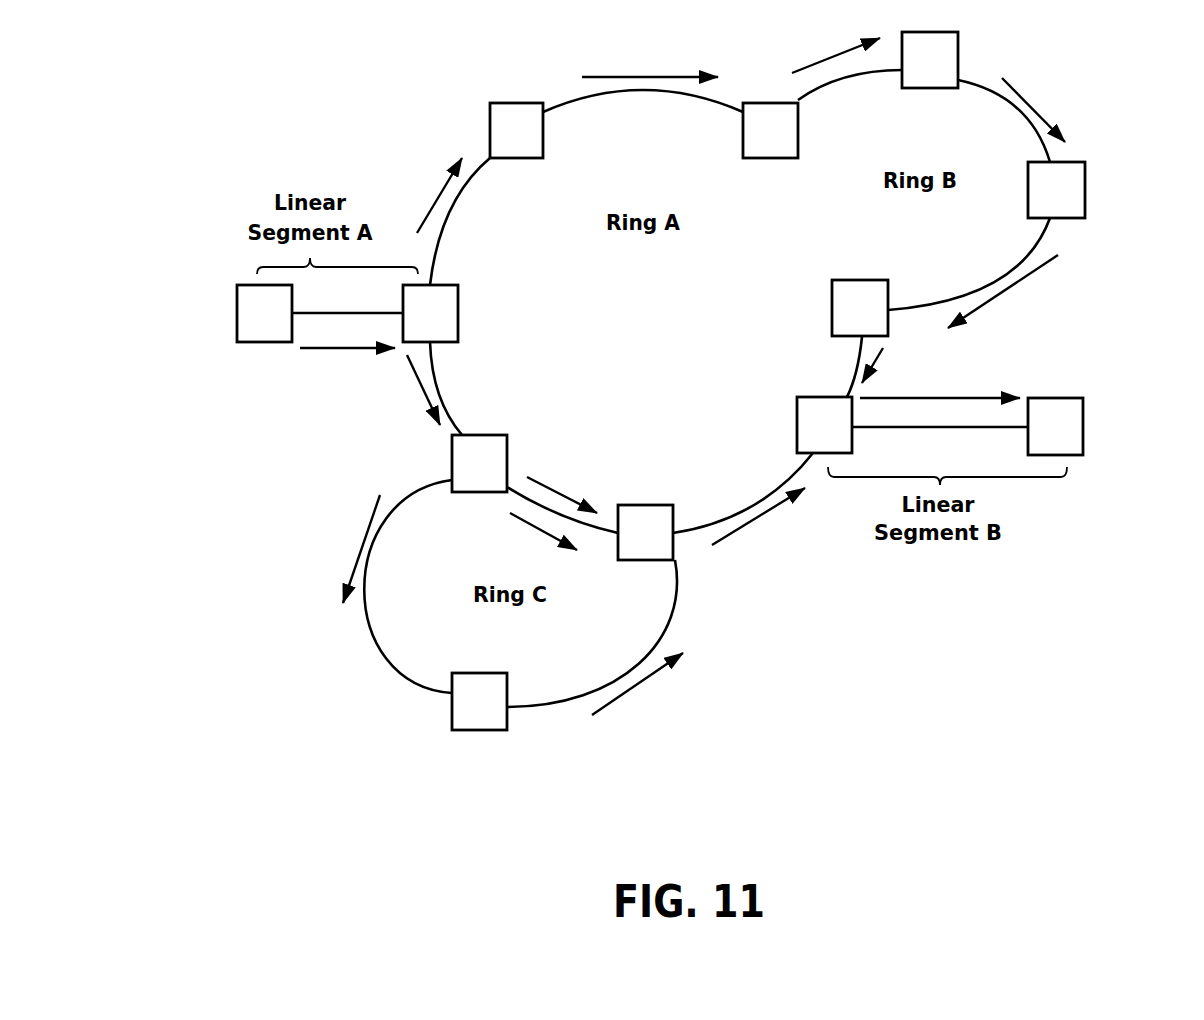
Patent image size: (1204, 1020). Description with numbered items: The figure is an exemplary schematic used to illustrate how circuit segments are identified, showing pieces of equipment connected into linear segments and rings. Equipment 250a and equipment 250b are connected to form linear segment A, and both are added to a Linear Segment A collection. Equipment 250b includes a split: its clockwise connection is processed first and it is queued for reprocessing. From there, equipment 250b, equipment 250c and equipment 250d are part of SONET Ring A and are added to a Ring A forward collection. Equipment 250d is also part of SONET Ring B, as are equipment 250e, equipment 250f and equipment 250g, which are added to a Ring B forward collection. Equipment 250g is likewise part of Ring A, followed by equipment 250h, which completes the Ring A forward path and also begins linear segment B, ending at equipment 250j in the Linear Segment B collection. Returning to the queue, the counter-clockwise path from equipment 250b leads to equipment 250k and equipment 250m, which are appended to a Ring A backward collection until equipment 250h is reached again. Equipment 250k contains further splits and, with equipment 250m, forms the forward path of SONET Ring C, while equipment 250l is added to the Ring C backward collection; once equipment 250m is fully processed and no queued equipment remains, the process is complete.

The equipment 250a is at (237, 308).
The equipment 250b is at (458, 312).
The equipment 250c is at (490, 122).
The equipment 250d is at (798, 125).
The equipment 250e is at (958, 55).
The equipment 250f is at (1085, 190).
The equipment 250g is at (832, 305).
The equipment 250h is at (797, 425).
The equipment 250j is at (1083, 425).
The equipment 250k is at (452, 457).
The equipment 250l is at (452, 692).
The equipment 250m is at (645, 505).